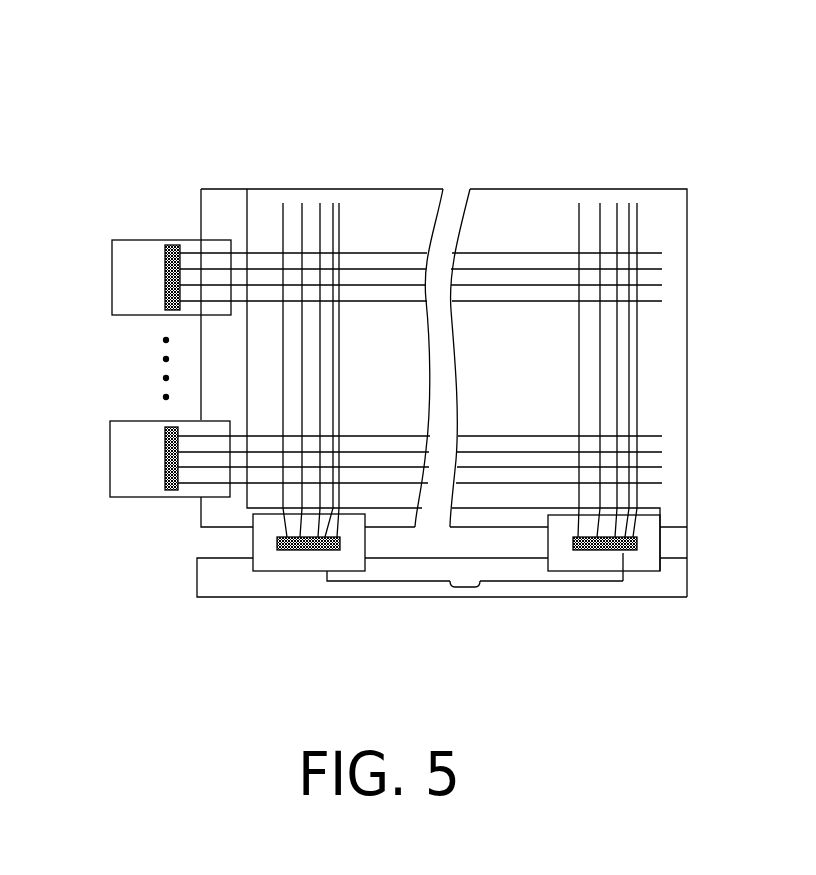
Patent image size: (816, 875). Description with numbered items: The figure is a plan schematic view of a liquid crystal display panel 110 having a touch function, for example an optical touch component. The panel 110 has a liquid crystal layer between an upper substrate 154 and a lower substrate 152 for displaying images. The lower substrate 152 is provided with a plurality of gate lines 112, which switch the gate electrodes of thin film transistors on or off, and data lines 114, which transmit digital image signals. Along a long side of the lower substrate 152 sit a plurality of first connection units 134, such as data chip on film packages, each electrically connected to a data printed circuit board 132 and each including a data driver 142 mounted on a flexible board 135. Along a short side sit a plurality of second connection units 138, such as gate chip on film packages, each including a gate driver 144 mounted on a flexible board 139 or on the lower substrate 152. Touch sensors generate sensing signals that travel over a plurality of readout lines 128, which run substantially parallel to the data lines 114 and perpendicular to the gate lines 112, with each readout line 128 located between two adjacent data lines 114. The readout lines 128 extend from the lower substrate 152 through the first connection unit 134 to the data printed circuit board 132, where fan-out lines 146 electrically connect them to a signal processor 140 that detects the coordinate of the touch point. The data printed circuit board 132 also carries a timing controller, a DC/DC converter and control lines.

The liquid crystal display panel 110 is at (226, 103).
The gate lines 112 is at (645, 302).
The data lines 114 is at (320, 213).
The readout lines 128 is at (336, 212).
The data printed circuit board 132 is at (228, 582).
The first connection unit 134 is at (648, 555).
The flexible board 135 is at (637, 558).
The second connection unit 138 is at (138, 472).
The flexible board 139 is at (123, 455).
The signal processor 140 is at (465, 590).
The data driver 142 is at (300, 552).
The gate driver 144 is at (175, 492).
The fan-out lines 146 is at (390, 583).
The lower substrate 152 is at (218, 200).
The upper substrate 154 is at (273, 200).